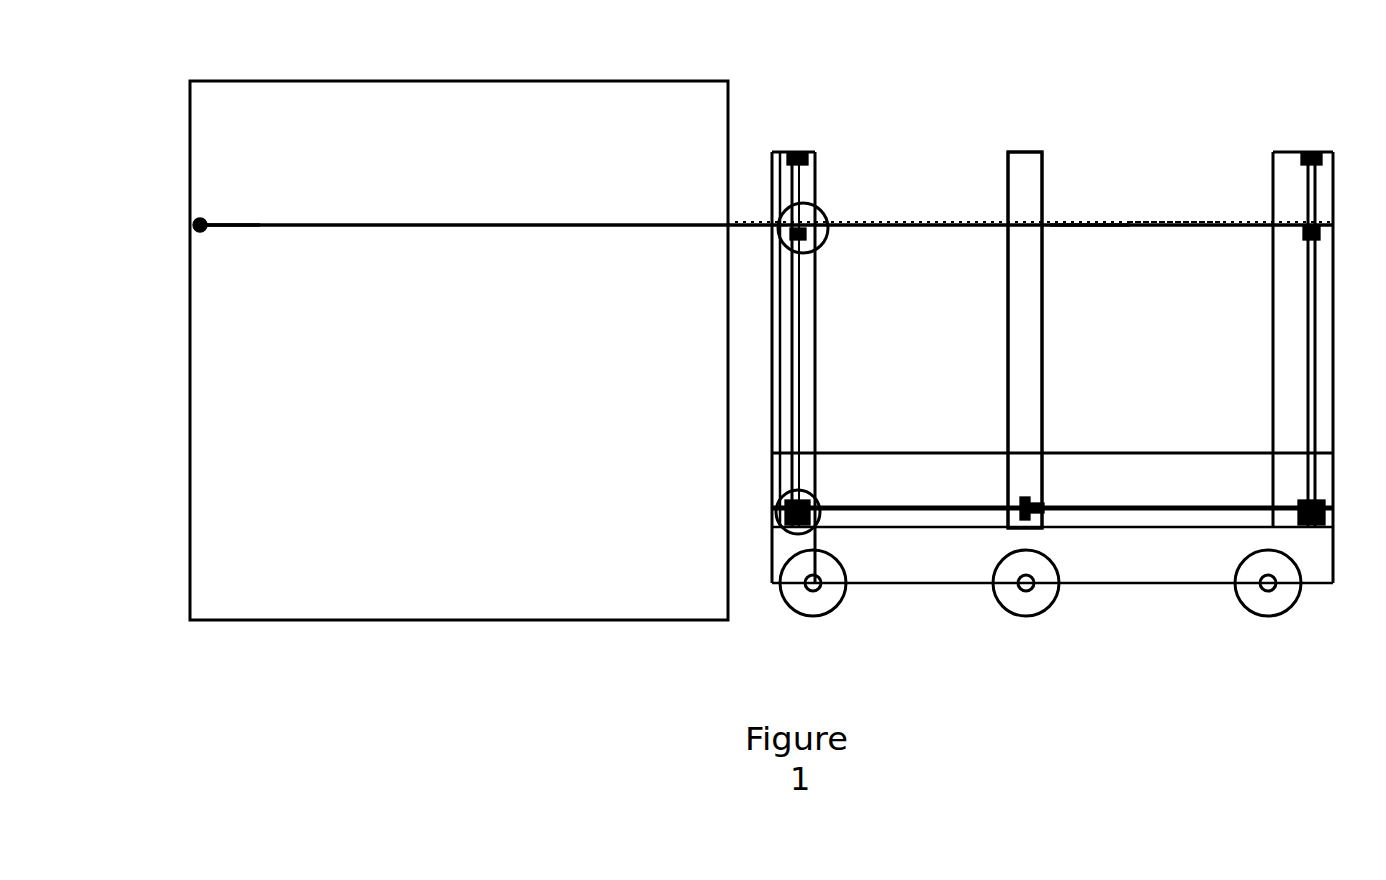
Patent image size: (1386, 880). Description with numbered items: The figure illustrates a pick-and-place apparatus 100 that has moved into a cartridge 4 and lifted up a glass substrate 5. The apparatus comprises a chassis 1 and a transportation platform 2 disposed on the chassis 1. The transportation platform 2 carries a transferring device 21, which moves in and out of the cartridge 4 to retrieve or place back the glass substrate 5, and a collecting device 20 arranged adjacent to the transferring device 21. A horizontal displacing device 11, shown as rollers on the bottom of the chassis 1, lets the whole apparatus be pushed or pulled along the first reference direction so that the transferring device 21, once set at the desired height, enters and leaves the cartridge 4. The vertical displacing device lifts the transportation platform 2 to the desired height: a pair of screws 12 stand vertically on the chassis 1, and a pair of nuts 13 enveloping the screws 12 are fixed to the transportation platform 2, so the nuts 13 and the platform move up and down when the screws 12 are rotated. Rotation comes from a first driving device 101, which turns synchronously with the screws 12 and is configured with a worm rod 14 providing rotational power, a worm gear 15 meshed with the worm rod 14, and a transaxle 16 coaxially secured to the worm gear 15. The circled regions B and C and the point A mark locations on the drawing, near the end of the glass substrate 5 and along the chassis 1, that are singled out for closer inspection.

The chassis 1 is at (1165, 568).
The transportation platform 2 is at (1090, 222).
The cartridge 4 is at (482, 80).
The glass substrate 5 is at (262, 222).
The horizontal displacing device 11 is at (810, 605).
The screws 12 is at (1312, 152).
The nuts 13 is at (1310, 228).
The worm rod 14 is at (1035, 510).
The worm gear 15 is at (1045, 514).
The transaxle 16 is at (1205, 508).
The collecting device 20 is at (1170, 222).
The transferring device 21 is at (237, 232).
The pick-and-place apparatus 100 is at (1028, 135).
The first driving device 101 is at (1040, 512).
The point A is at (200, 222).
The detail B is at (822, 205).
The detail C is at (776, 518).